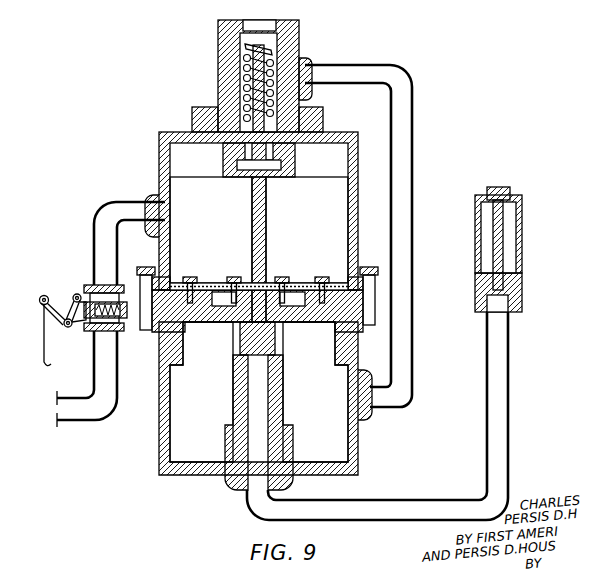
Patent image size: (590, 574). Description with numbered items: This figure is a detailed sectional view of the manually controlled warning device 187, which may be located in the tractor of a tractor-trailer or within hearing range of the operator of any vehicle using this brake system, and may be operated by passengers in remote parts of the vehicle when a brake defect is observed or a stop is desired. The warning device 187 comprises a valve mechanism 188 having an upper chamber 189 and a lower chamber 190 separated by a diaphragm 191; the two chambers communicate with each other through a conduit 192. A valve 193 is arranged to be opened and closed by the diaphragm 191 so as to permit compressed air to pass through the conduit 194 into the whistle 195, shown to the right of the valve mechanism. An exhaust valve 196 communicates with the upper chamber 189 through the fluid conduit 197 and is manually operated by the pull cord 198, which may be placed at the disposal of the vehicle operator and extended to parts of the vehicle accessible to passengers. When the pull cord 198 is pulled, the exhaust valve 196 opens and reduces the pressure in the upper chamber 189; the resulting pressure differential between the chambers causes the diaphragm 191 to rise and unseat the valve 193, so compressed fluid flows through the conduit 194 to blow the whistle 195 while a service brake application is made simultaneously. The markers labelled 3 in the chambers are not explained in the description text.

The warning device 187 is at (454, 178).
The valve mechanism 188 is at (177, 134).
The upper chamber 189 is at (321, 225).
The lower chamber 190 is at (334, 421).
The diaphragm 191 is at (216, 303).
The conduit 192 is at (419, 111).
The valve 193 is at (273, 346).
The conduit 194 is at (508, 462).
The whistle 195 is at (522, 246).
The exhaust valve 196 is at (88, 290).
The fluid conduit 197 is at (97, 208).
The pull cord 198 is at (47, 358).
The conduit connection 3 is at (206, 163).